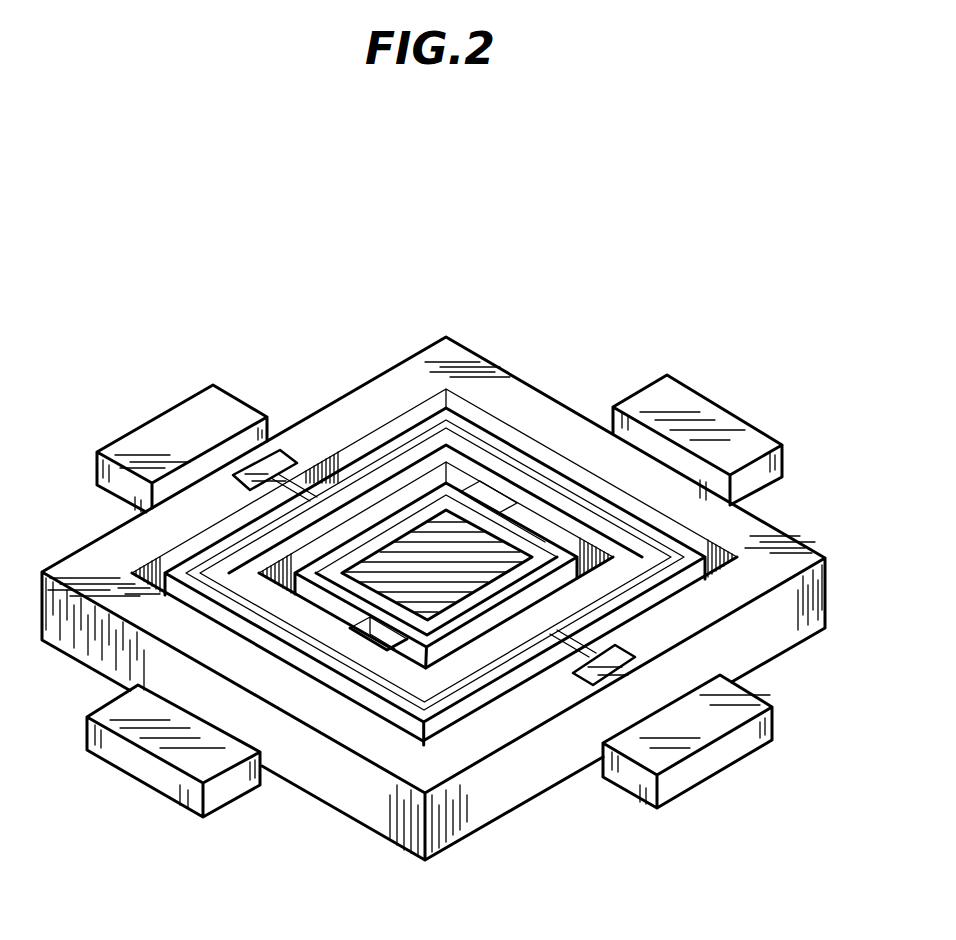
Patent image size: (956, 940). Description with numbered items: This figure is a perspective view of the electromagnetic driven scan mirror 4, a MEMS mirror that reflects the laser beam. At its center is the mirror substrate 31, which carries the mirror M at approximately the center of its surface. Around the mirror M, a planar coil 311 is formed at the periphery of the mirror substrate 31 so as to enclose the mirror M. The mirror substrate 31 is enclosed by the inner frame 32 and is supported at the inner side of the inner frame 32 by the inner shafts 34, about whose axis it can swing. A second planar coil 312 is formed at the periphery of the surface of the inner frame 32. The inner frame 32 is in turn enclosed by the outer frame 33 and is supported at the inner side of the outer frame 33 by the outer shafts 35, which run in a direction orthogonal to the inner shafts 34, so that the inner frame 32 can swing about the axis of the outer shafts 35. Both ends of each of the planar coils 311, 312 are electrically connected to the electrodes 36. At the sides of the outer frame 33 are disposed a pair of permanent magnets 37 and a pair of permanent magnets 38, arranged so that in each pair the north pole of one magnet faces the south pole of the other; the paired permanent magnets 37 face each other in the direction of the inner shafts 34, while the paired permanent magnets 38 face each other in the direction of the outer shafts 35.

The electromagnetic driven scan mirror 4 is at (472, 241).
The mirror substrate 31 is at (460, 485).
The planar coil 311 is at (493, 523).
The planar coil 312 is at (680, 548).
The inner frame 32 is at (430, 417).
The outer frame 33 is at (353, 390).
The inner shafts 34 is at (615, 560).
The outer shafts 35 is at (308, 485).
The electrodes 36 is at (257, 472).
The permanent magnets 37 is at (672, 398).
The permanent magnets 38 is at (133, 450).
The mirror M is at (415, 600).